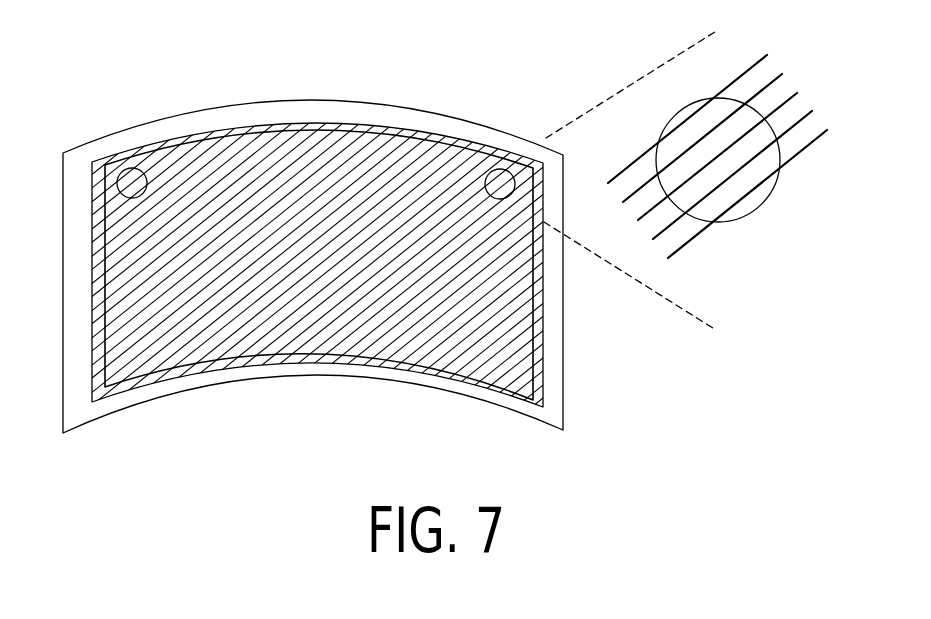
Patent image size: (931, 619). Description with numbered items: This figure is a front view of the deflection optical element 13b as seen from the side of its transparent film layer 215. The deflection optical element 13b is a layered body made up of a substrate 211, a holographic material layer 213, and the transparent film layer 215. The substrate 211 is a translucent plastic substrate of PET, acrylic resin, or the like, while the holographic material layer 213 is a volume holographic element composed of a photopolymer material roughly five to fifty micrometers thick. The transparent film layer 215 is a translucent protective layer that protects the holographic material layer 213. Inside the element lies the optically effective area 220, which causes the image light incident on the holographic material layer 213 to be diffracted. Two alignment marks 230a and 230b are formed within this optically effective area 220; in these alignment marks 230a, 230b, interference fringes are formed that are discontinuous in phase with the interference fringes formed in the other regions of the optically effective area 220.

The deflection optical element 13b is at (454, 226).
The substrate 211 is at (228, 110).
The optically effective area 220 is at (338, 142).
The holographic material layer 213 is at (257, 377).
The transparent film layer 215 is at (319, 287).
The alignment mark 230a is at (500, 169).
The alignment mark 230b is at (127, 170).